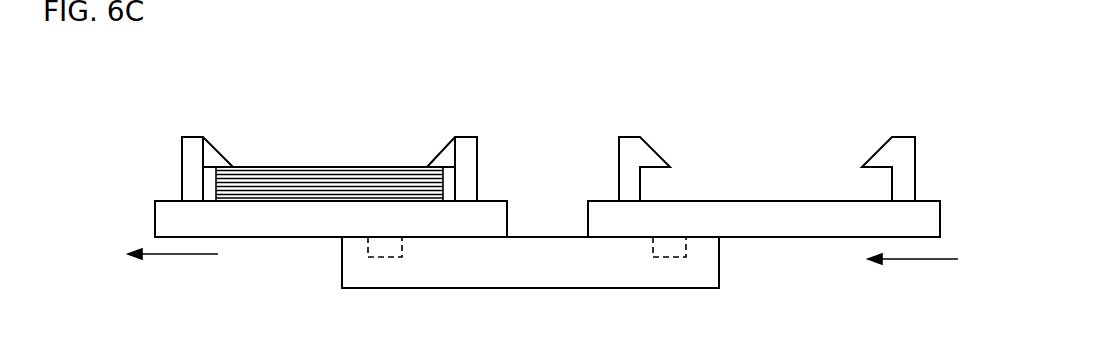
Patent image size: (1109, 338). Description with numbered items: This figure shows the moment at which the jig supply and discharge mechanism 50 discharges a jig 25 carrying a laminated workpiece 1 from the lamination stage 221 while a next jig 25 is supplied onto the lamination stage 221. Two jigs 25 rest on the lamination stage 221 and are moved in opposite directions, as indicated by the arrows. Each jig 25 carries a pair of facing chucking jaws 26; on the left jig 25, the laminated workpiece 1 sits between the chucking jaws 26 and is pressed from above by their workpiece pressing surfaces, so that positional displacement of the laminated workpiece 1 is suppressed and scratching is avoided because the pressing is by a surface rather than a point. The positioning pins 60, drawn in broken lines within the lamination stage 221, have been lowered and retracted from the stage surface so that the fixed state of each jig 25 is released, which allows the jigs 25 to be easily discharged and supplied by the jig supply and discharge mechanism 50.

The workpiece 1 is at (328, 167).
The jig 25 is at (490, 200).
The chucking jaw 26 is at (217, 150).
The jig supply and discharge mechanism 50 is at (698, 131).
The positioning pin 60 is at (686, 250).
The lamination stage 221 is at (342, 272).